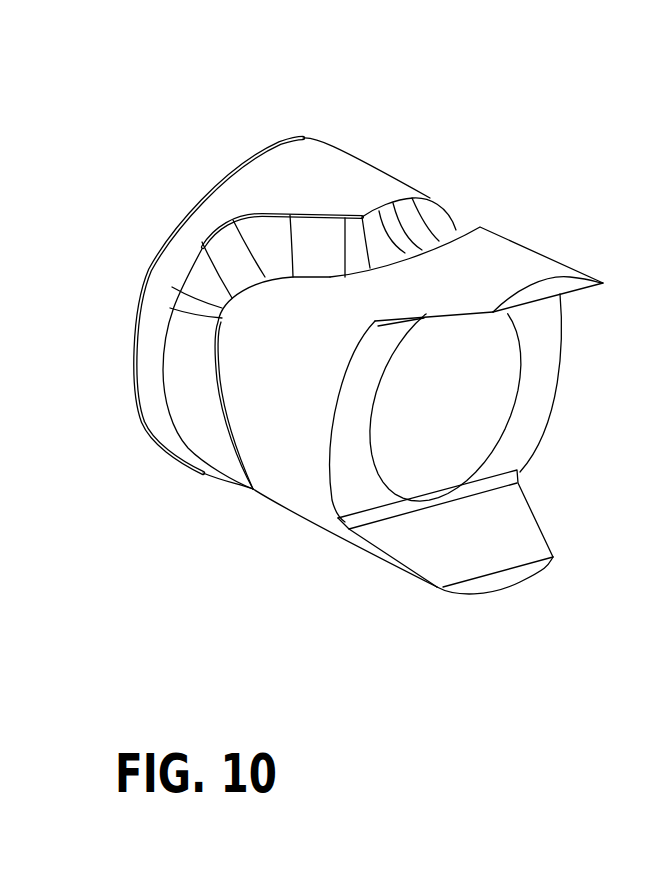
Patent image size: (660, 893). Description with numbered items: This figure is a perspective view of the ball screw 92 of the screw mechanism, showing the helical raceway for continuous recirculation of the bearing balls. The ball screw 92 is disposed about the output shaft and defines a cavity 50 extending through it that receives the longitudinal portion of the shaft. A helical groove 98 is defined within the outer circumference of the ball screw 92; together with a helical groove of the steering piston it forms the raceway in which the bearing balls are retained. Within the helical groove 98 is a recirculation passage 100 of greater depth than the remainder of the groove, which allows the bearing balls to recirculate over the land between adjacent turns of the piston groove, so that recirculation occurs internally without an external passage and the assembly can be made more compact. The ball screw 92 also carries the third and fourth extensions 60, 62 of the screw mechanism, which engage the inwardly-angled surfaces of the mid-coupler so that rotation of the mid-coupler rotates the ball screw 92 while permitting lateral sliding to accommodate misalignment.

The ball screw 92 is at (438, 160).
The recirculation passage 100 is at (273, 243).
The helical groove 98 is at (433, 220).
The third extension 60 is at (530, 258).
The cavity 50 is at (462, 374).
The fourth extension 62 is at (505, 533).